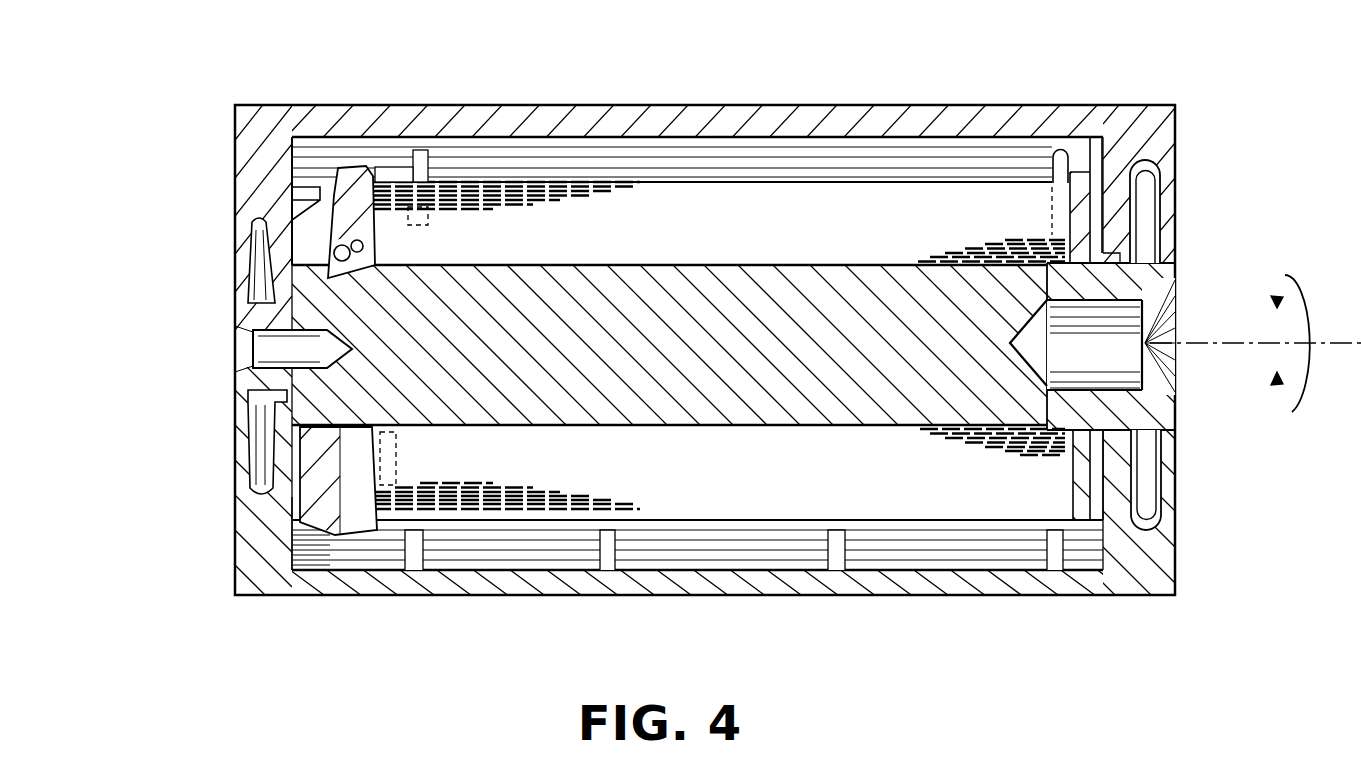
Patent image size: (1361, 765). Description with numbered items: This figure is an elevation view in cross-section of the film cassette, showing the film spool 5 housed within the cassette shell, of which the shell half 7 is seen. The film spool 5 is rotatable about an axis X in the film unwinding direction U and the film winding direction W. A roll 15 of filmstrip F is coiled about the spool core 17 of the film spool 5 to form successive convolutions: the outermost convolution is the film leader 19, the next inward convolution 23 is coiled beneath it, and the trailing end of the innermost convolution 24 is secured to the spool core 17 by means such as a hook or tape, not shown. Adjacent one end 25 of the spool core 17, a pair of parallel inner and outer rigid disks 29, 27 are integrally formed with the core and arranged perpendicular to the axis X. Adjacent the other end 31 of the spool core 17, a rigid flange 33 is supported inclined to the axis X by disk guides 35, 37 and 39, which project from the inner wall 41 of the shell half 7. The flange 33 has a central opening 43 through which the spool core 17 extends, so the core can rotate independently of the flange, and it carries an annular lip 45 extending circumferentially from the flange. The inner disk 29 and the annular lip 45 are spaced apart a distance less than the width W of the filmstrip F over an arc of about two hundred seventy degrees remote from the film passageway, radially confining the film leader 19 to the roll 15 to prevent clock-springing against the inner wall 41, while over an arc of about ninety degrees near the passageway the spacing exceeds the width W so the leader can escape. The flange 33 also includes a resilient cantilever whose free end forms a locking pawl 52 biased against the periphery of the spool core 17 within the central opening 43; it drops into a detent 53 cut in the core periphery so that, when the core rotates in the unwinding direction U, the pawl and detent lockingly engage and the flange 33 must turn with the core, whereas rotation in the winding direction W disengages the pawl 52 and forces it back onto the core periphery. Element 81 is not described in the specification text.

The film spool 5 is at (1113, 373).
The shell half 7 is at (553, 590).
The film roll 15 is at (915, 183).
The spool core 17 is at (827, 297).
The film leader 19 is at (568, 107).
The next inward convolution 23 is at (510, 107).
The innermost convolution 24 is at (975, 275).
The end of spool core 25 is at (1160, 277).
The outer rigid disk 27 is at (1165, 200).
The inner rigid disk 29 is at (1082, 182).
The another end of spool core 31 is at (235, 388).
The rigid flange 33 is at (235, 513).
The disk guide 35 is at (420, 107).
The disk guide 37 is at (318, 183).
The disk guide 39 is at (387, 563).
The inner wall 41 is at (701, 538).
The central opening 43 is at (293, 349).
The annular lip 45 is at (333, 537).
The locking pawl 52 is at (403, 258).
The detent 53 is at (340, 278).
The lower spring ring 81 is at (1172, 520).
The filmstrip F is at (748, 178).
The film unwinding direction U is at (1277, 303).
The film winding direction W is at (1277, 378).
The axis X is at (1360, 360).